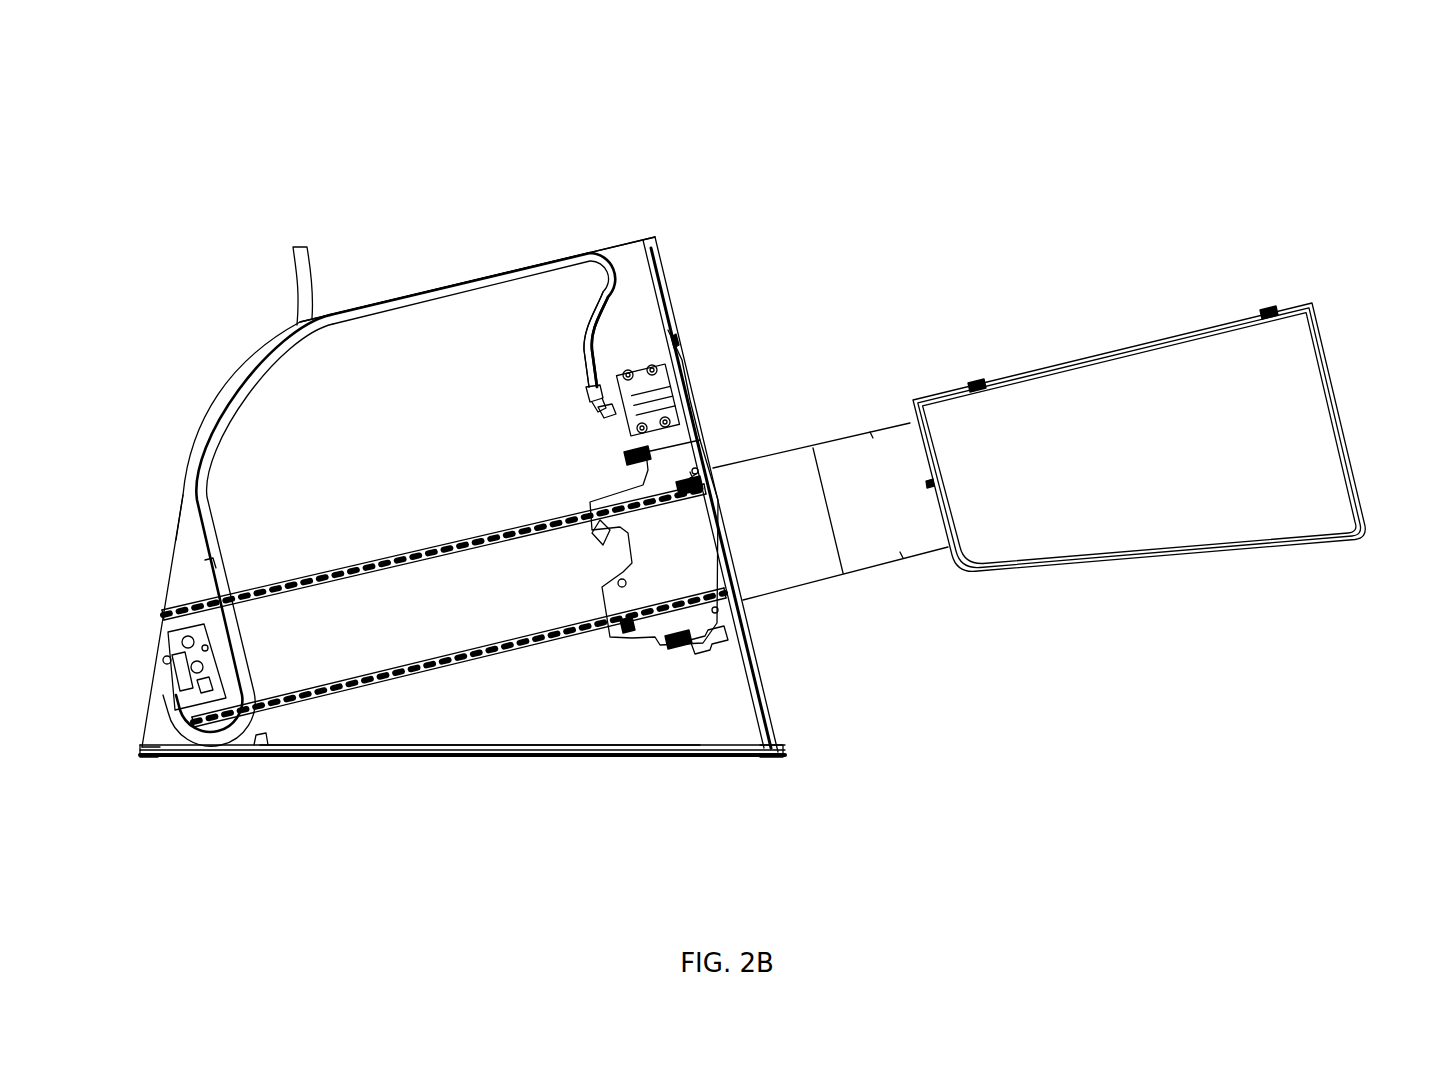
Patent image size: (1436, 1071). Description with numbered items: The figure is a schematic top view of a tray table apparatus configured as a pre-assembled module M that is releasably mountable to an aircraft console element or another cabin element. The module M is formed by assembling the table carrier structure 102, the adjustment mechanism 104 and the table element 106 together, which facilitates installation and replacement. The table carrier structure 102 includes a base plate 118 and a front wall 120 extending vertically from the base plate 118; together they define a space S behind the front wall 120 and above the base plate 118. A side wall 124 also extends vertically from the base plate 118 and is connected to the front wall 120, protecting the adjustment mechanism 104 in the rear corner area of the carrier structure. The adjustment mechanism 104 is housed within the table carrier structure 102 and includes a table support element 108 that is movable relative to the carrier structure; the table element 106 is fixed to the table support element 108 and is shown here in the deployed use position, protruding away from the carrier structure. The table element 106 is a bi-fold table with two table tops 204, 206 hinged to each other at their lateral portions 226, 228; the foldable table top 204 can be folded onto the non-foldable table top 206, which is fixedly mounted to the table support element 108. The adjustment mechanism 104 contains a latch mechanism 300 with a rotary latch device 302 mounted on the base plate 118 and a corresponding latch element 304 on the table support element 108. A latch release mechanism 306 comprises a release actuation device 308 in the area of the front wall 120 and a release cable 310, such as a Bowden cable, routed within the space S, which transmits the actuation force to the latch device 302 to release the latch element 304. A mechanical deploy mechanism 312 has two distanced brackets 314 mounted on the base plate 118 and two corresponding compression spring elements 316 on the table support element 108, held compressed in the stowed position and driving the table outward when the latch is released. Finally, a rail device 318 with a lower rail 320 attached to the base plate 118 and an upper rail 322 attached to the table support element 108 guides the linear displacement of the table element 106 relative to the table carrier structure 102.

The pre-assembled module M is at (255, 120).
The table carrier structure 102 is at (416, 210).
The space S is at (460, 348).
The base plate 118 is at (567, 300).
The release cable 310 is at (617, 277).
The release actuation device 308 is at (660, 358).
The latch release mechanism 306 is at (708, 326).
The spring elements 316 is at (656, 470).
The lateral portion 226 is at (1290, 303).
The lateral portion 228 is at (956, 433).
The table top 204 is at (1308, 385).
The table top 206 is at (1342, 415).
The mechanical deploy mechanism 312 is at (172, 500).
The brackets 314 is at (208, 564).
The latch mechanism 300 is at (161, 611).
The latch device 302 is at (168, 660).
The table element 106 is at (1278, 503).
The table support element 108 is at (808, 558).
The front wall 120 is at (782, 713).
The upper rail 322 is at (637, 634).
The latch element 304 is at (620, 578).
The lower rail 320 is at (478, 657).
The rail device 318 is at (363, 713).
The adjustment mechanism 104 is at (402, 715).
The side wall 124 is at (153, 757).